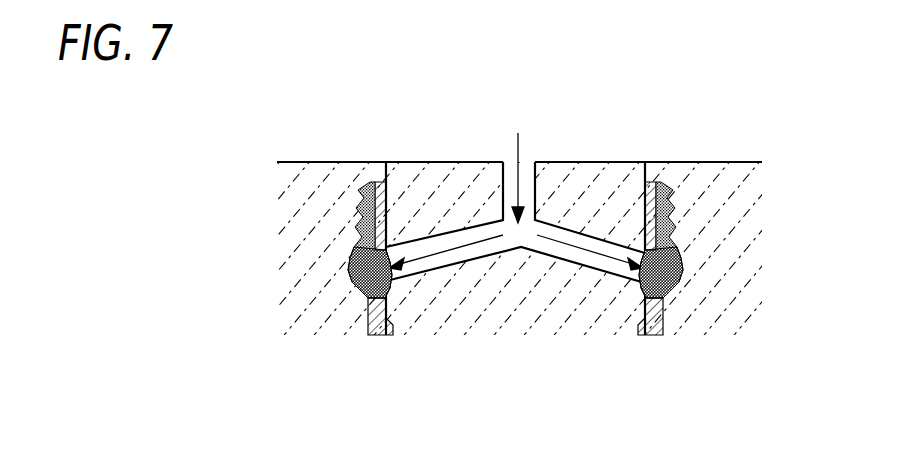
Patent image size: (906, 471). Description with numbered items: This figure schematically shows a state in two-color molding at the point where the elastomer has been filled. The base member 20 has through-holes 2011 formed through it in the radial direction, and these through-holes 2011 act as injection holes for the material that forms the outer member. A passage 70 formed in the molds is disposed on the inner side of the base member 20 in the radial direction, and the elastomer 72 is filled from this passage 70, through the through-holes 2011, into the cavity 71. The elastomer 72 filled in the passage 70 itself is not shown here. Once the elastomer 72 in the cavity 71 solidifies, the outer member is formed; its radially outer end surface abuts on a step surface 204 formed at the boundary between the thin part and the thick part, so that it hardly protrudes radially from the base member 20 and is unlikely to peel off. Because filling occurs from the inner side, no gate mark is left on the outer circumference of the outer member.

The base member 20 is at (388, 208).
The through-holes 2011 is at (353, 260).
The passage 70 is at (475, 258).
The cavity 71 is at (365, 285).
The elastomer 72 is at (355, 275).
The step surface 204 is at (383, 337).